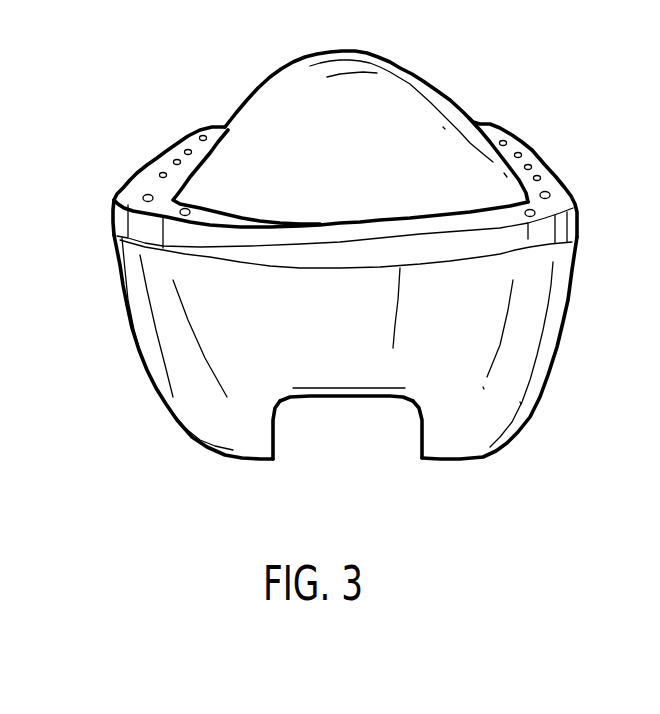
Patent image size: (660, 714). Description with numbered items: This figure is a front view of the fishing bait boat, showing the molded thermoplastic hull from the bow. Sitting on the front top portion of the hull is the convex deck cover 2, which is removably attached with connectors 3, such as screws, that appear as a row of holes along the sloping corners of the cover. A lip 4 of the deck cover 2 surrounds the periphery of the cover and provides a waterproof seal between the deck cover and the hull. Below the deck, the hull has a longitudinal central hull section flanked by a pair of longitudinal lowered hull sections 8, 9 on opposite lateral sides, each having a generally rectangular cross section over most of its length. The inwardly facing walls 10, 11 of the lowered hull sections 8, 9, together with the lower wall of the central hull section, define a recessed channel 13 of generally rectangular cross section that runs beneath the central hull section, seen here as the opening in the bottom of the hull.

The convex deck cover 2 is at (366, 110).
The connectors 3 is at (370, 176).
The lip 4 is at (373, 193).
The lowered hull section 8 is at (485, 370).
The lowered hull section 9 is at (193, 375).
The inwardly facing wall 10 is at (406, 454).
The inwardly facing wall 11 is at (294, 450).
The recessed channel 13 is at (346, 441).